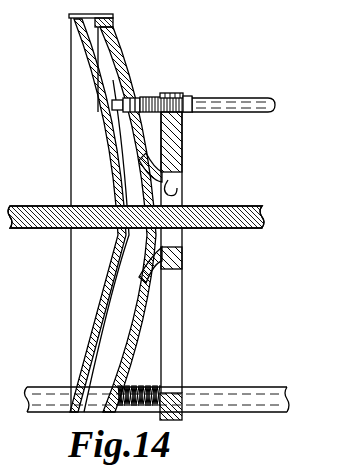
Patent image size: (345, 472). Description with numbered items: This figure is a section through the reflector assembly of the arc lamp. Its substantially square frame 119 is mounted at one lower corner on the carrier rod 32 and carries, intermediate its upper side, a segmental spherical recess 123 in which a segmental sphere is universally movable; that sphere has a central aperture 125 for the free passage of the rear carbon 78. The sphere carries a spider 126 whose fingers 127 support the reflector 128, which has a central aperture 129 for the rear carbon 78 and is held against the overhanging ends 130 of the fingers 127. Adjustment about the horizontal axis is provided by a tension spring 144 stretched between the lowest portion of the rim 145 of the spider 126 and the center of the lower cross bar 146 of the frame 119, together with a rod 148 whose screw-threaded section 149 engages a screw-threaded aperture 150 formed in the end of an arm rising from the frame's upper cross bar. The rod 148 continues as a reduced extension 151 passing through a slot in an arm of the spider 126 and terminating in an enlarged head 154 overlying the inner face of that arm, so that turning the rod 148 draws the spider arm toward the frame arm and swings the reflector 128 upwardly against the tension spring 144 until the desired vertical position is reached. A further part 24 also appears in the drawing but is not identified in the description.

The carrier rod 32 is at (253, 389).
The overhanging ends 130 is at (70, 21).
The fingers 127 is at (93, 9).
The rim 145 is at (110, 77).
The reflector 128 is at (84, 57).
The central aperture 129 is at (122, 204).
The spider 126 is at (123, 97).
The enlarged head 154 is at (121, 105).
The reduced extension 151 is at (133, 97).
The screw-threaded aperture 150 is at (164, 93).
The screw-threaded section 149 is at (186, 95).
The rod 148 is at (232, 97).
The frame 119 is at (184, 128).
The segmental spherical recess 123 is at (180, 171).
The bracket arm 24 is at (168, 172).
The aperture 125 is at (178, 190).
The rear carbon 78 is at (239, 208).
The tension spring 144 is at (122, 384).
The lower cross bar 146 is at (183, 404).